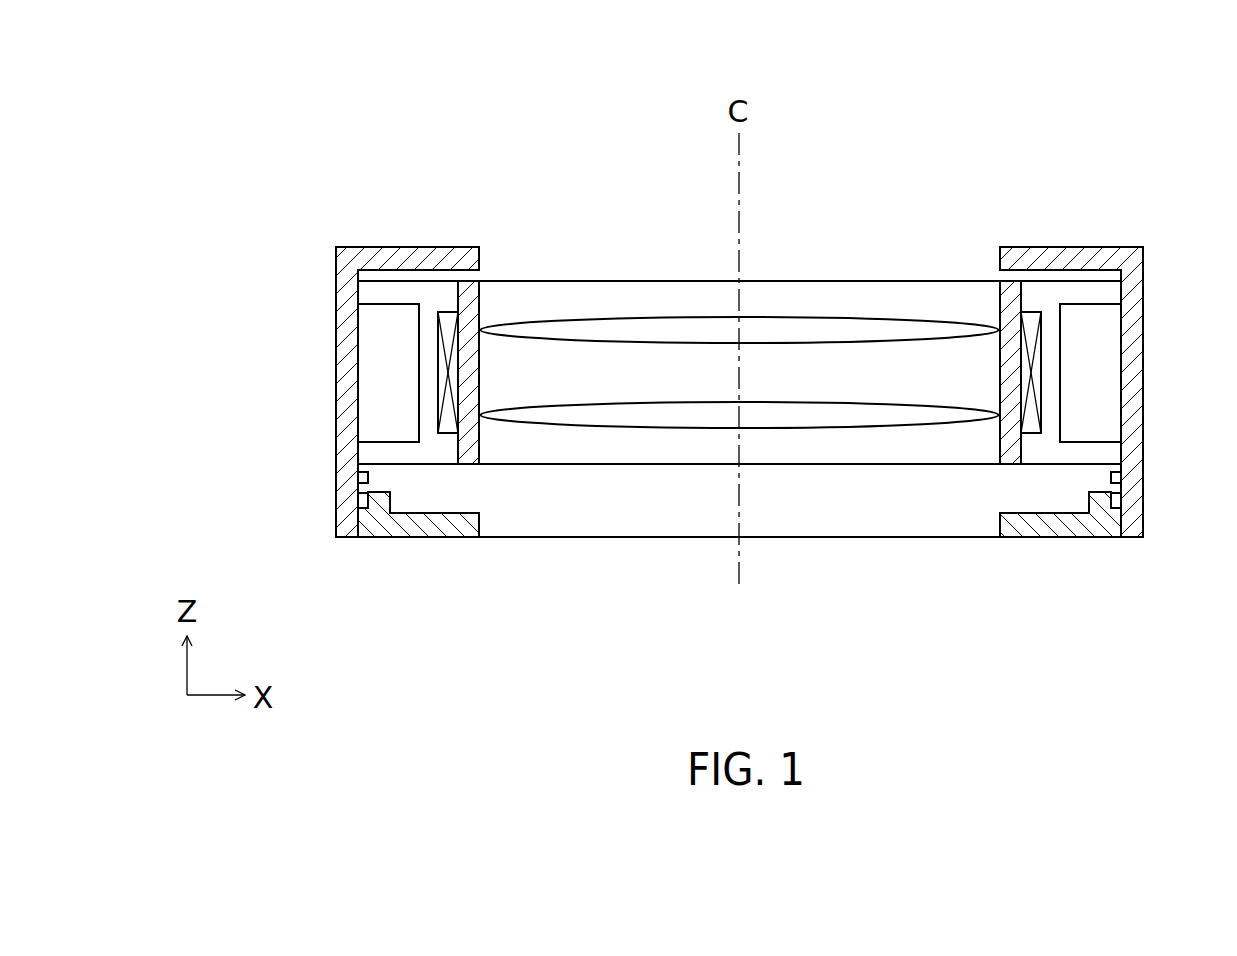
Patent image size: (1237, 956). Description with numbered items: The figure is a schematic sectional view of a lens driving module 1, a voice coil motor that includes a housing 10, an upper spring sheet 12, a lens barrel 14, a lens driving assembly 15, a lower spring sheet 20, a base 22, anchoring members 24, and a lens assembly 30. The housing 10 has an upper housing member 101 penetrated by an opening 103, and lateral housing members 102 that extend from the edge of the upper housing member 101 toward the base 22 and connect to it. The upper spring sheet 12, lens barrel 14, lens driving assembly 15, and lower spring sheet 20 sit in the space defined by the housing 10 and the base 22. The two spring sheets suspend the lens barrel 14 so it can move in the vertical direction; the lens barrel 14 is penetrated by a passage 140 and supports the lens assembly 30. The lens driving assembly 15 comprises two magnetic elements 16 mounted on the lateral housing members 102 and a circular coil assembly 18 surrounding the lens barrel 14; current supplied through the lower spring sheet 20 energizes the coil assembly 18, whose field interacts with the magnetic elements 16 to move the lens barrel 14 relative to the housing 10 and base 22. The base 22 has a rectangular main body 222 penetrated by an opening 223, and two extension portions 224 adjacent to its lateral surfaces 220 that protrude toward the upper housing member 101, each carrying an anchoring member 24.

The lens driving module 1 is at (296, 164).
The housing 10 is at (1127, 246).
The upper housing member 101 is at (405, 262).
The lateral housing member 102 is at (350, 395).
The opening 103 is at (497, 261).
The upper spring sheet 12 is at (1066, 280).
The lens barrel 14 is at (1005, 283).
The passage 140 is at (549, 309).
The lens driving assembly 15 is at (1099, 296).
The magnetic element 16 is at (370, 326).
The coil assembly 18 is at (1030, 400).
The lower spring sheet 20 is at (1043, 466).
The base 22 is at (493, 544).
The lateral surface 220 is at (362, 520).
The main body 222 is at (445, 528).
The opening 223 is at (933, 538).
The extension portion 224 is at (380, 505).
The anchoring member 24 is at (360, 500).
The lens assembly 30 is at (872, 315).